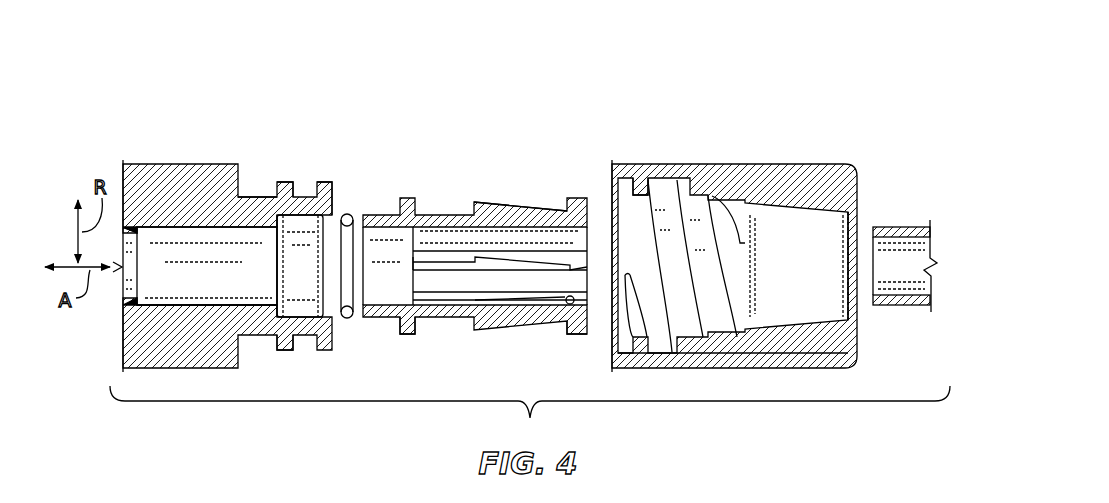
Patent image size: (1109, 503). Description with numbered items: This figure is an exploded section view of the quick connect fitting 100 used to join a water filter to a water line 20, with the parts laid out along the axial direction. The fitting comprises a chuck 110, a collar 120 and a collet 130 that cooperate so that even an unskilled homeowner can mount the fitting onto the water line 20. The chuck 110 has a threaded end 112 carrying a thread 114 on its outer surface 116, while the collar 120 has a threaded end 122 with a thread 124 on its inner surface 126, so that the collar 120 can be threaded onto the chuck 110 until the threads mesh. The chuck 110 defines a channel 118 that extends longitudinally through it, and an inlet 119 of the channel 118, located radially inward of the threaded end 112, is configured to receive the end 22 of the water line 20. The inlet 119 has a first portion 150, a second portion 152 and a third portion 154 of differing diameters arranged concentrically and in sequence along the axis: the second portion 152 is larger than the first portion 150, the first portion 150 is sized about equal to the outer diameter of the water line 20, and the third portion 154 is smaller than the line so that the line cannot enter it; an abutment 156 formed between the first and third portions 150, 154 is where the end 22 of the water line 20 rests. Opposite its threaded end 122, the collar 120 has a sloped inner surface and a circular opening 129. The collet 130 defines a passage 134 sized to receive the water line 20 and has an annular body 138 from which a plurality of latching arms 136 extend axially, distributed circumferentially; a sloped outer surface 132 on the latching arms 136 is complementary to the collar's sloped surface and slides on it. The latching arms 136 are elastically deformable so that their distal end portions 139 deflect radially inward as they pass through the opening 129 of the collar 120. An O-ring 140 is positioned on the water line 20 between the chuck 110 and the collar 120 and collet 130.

The quick connect fitting 100 is at (878, 120).
The chuck 110 is at (200, 182).
The threaded end 112 is at (274, 338).
The thread 114 is at (281, 182).
The outer surface 116 is at (258, 195).
The channel 118 is at (168, 272).
The inlet 119 is at (322, 200).
The collar 120 is at (765, 172).
The threaded end 122 is at (665, 368).
The thread 124 is at (658, 210).
The inner surface 126 is at (624, 186).
The opening 129 is at (852, 280).
The collet 130 is at (443, 215).
The sloped outer surface 132 is at (512, 200).
The passage 134 is at (408, 270).
The latching arms 136 is at (552, 237).
The annular body 138 is at (418, 332).
The distal end portion 139 is at (588, 338).
The O-ring 140 is at (350, 280).
The first portion 150 is at (188, 309).
The second portion 152 is at (300, 320).
The third portion 154 is at (132, 226).
The abutment 156 is at (284, 272).
The water line 20 is at (900, 227).
The end 22 is at (880, 268).